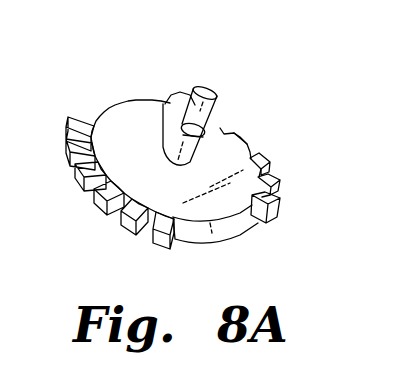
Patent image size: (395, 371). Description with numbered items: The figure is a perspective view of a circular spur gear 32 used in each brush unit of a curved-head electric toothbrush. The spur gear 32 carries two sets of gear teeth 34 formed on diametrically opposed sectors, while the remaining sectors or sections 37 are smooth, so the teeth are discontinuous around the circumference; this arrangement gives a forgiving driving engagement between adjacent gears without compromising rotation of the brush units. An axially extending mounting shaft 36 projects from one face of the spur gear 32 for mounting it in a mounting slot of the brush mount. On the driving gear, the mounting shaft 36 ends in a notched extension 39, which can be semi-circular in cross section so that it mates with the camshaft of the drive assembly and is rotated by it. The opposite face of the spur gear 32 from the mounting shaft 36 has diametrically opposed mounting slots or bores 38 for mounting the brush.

The spur gear 32 is at (134, 100).
The gear teeth 34 is at (240, 134).
The mounting shaft 36 is at (164, 104).
The smooth sections 37 is at (237, 240).
The mounting bores 38 is at (141, 150).
The notched extension 39 is at (214, 88).